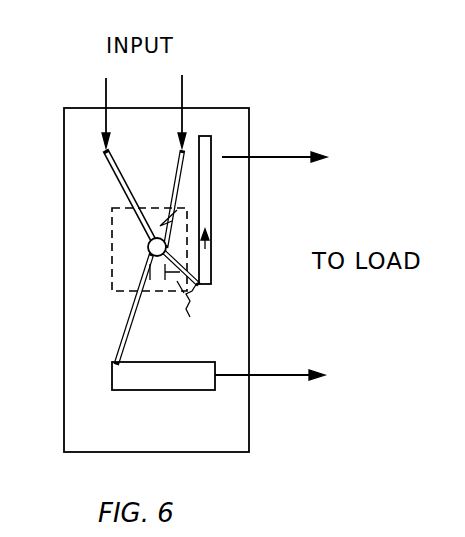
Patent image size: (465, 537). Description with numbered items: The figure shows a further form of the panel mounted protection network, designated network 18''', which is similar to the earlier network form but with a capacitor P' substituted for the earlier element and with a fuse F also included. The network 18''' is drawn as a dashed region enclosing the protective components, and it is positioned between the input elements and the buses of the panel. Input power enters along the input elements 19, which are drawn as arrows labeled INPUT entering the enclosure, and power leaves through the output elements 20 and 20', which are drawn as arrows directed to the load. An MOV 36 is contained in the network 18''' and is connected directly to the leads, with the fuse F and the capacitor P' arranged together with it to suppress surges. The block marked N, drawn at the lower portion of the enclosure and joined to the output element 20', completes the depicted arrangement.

The input element 19 is at (106, 90).
The output element 20 is at (282, 132).
The output element 20' is at (274, 352).
The protector network 18''' is at (107, 245).
The MOV 36 is at (148, 244).
The fuse F is at (162, 218).
The capacitor P' is at (163, 297).
The neutral / output member N is at (163, 376).